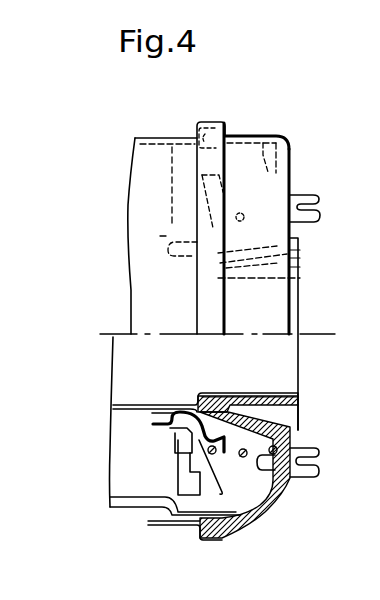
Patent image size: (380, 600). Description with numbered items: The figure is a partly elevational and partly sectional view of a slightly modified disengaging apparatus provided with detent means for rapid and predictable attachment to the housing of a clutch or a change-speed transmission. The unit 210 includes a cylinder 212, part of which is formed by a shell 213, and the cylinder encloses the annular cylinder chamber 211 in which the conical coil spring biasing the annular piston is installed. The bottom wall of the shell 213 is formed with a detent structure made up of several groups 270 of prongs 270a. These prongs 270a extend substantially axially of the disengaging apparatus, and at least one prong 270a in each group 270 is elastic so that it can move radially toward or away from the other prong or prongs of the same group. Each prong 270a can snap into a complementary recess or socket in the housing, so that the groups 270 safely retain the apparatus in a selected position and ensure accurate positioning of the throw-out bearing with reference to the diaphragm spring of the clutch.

The unit 210 is at (276, 125).
The annular cylinder chamber 211 is at (243, 503).
The cylinder 212 is at (290, 149).
The shell 213 is at (290, 315).
The groups of prongs 270 is at (318, 222).
The prongs 270a is at (298, 452).